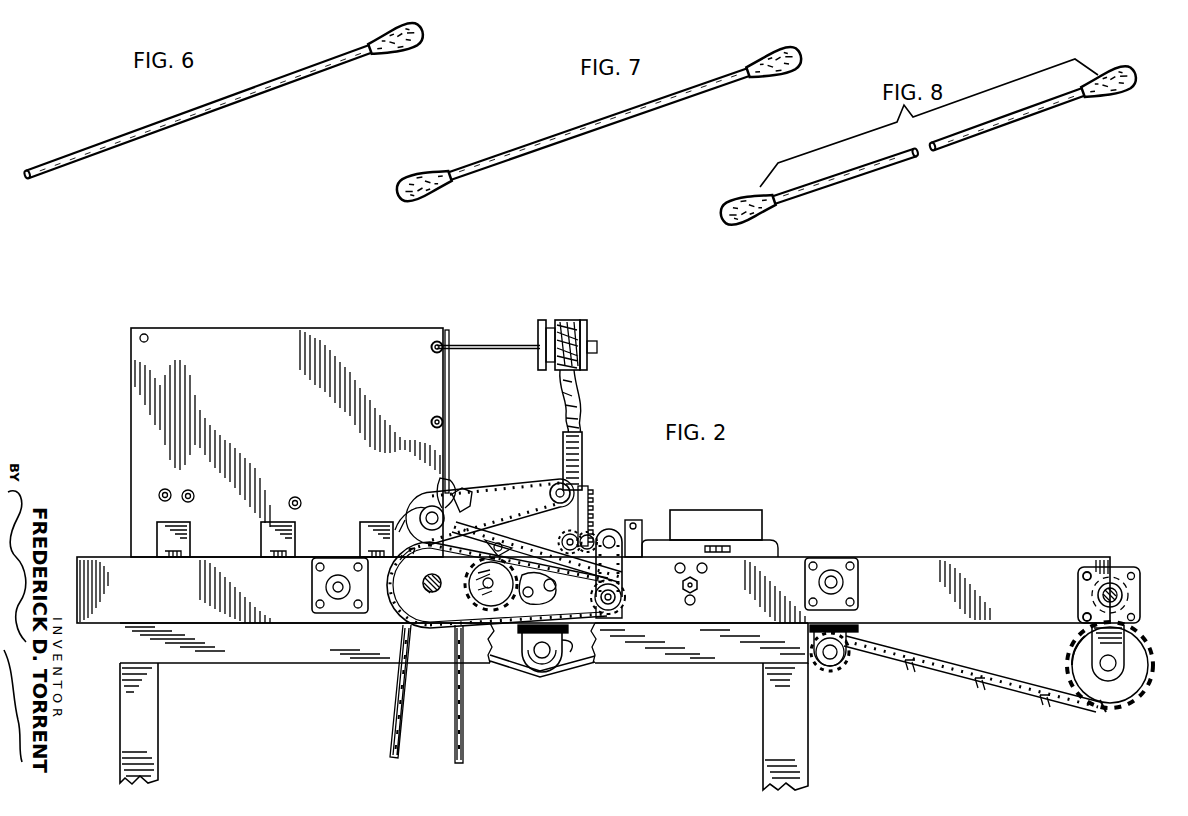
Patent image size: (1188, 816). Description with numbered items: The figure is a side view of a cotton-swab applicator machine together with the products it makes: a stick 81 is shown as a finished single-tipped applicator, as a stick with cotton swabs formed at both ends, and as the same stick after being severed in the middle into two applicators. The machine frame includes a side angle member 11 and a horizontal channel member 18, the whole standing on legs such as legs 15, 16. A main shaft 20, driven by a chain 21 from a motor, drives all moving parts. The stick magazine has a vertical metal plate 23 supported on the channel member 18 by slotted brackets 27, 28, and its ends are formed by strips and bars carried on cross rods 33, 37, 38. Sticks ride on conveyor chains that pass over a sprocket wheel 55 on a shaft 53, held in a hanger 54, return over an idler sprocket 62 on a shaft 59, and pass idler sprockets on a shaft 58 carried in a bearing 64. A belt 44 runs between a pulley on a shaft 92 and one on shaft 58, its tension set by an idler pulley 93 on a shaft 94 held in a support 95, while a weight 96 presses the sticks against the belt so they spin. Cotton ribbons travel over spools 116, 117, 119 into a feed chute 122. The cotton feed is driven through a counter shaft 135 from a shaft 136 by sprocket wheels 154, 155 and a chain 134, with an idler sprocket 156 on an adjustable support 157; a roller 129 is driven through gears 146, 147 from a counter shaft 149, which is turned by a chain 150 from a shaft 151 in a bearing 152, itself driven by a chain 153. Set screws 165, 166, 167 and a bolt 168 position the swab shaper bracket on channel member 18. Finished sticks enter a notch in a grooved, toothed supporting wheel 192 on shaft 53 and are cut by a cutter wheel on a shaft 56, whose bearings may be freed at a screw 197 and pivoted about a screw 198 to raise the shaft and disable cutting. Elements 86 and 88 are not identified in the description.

In FIG. 7, the stick 81 is at (631, 113).
In FIG. 2, the side angle member 11 is at (275, 655).
In FIG. 2, the leg 15 is at (152, 731).
In FIG. 2, the leg 16 is at (808, 756).
In FIG. 2, the channel member 18 is at (94, 565).
In FIG. 2, the main shaft 20 is at (428, 590).
In FIG. 2, the chain 21 is at (390, 740).
In FIG. 2, the vertical metal plate 23 is at (275, 342).
In FIG. 2, the bracket 27 is at (186, 545).
In FIG. 2, the bracket 28 is at (270, 535).
In FIG. 2, the cross rod 33 is at (146, 334).
In FIG. 2, the cross rod 37 is at (432, 349).
In FIG. 2, the cross rod 38 is at (432, 422).
In FIG. 2, the belt 44 is at (500, 665).
In FIG. 2, the shaft 53 is at (1140, 650).
In FIG. 2, the hanger 54 is at (1116, 658).
In FIG. 2, the sprocket wheel 55 is at (1103, 700).
In FIG. 2, the shaft 56 is at (1112, 590).
In FIG. 2, the shaft 58 is at (831, 578).
In FIG. 2, the shaft 59 is at (832, 658).
In FIG. 2, the idler sprocket 62 is at (850, 655).
In FIG. 2, the bearing 64 is at (858, 563).
In FIG. 2, the gear 86 is at (484, 586).
In FIG. 2, the shaft 88 is at (470, 573).
In FIG. 2, the shaft 92 is at (326, 587).
In FIG. 2, the idler pulley 93 is at (546, 660).
In FIG. 2, the shaft 94 is at (522, 676).
In FIG. 2, the support 95 is at (565, 647).
In FIG. 2, the weight 96 is at (758, 524).
In FIG. 2, the spool 116 is at (540, 330).
In FIG. 2, the spool 117 is at (588, 325).
In FIG. 2, the spool 119 is at (556, 320).
In FIG. 2, the feed chute 122 is at (582, 466).
In FIG. 2, the roller 129 is at (590, 510).
In FIG. 2, the chain 134 is at (515, 480).
In FIG. 2, the counter shaft 135 is at (572, 491).
In FIG. 2, the shaft 136 is at (415, 498).
In FIG. 2, the gear 146 is at (560, 545).
In FIG. 2, the gear 147 is at (556, 586).
In FIG. 2, the counter shaft 149 is at (626, 521).
In FIG. 2, the chain 150 is at (624, 563).
In FIG. 2, the shaft 151 is at (628, 597).
In FIG. 2, the bearing 152 is at (622, 618).
In FIG. 2, the chain 153 is at (630, 612).
In FIG. 2, the sprocket wheel 154 is at (542, 507).
In FIG. 2, the sprocket wheel 155 is at (452, 490).
In FIG. 2, the idler sprocket 156 is at (577, 540).
In FIG. 2, the adjustable support 157 is at (541, 596).
In FIG. 2, the set screw 165 is at (683, 562).
In FIG. 2, the set screw 166 is at (705, 562).
In FIG. 2, the set screw 167 is at (690, 606).
In FIG. 2, the bolt 168 is at (698, 586).
In FIG. 2, the supporting wheel 192 is at (1068, 652).
In FIG. 2, the bearing supporting screw 197 is at (1083, 616).
In FIG. 2, the screw 198 is at (1083, 576).